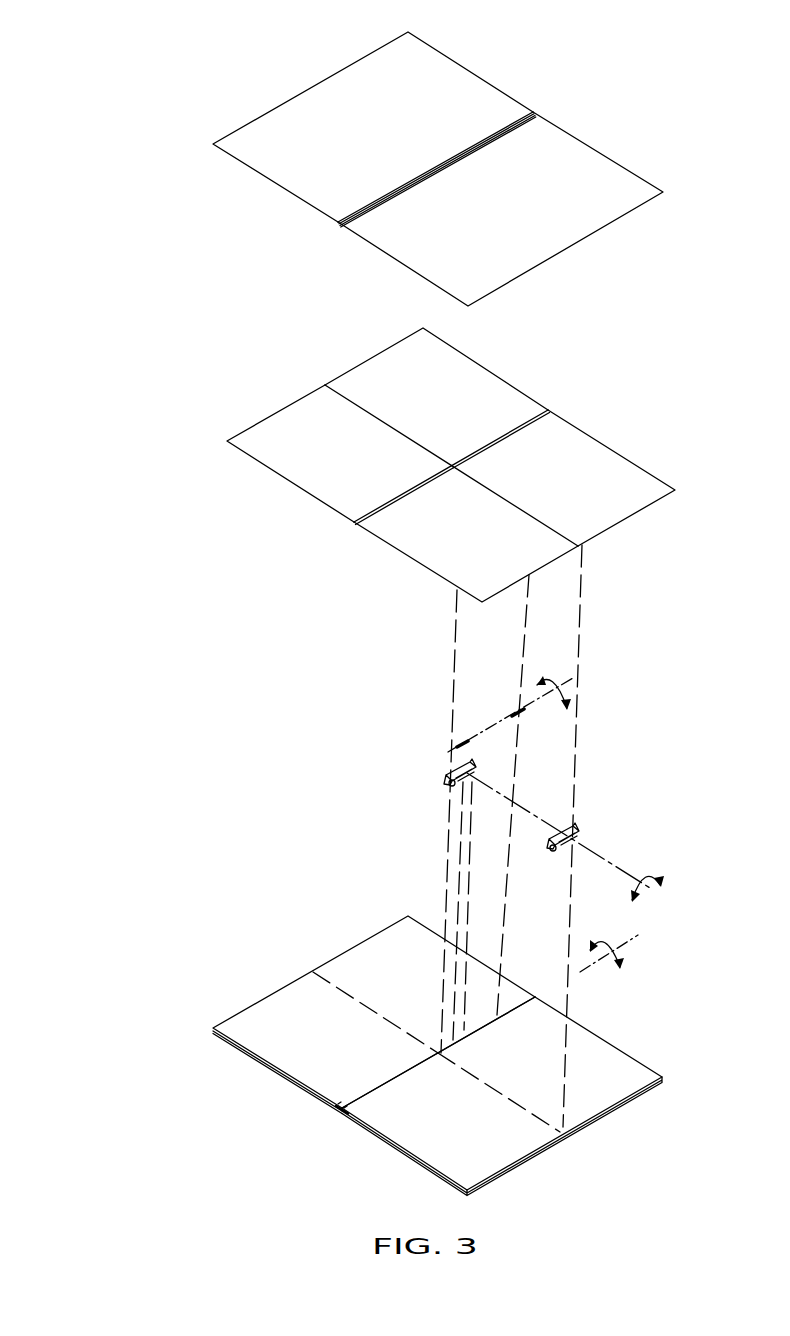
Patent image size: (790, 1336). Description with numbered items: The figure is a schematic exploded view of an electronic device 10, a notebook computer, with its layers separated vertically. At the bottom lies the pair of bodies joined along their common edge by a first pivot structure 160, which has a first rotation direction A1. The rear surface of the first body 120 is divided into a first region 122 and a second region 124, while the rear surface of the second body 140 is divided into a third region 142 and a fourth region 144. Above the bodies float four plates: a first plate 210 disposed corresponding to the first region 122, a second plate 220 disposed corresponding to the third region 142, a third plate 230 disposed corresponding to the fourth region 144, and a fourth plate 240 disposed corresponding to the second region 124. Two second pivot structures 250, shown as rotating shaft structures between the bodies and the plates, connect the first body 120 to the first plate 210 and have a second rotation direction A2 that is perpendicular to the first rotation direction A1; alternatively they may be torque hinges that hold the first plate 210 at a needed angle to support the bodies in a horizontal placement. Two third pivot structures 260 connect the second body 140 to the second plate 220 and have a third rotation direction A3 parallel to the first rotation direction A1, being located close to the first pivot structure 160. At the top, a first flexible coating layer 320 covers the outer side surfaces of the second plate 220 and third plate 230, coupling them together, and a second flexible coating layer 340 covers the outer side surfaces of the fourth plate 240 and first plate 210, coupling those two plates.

The electronic device 10 is at (110, 101).
The first body 120 is at (512, 1091).
The first region 122 is at (498, 1153).
The second region 124 is at (598, 1097).
The second body 140 is at (364, 1006).
The third region 142 is at (375, 955).
The fourth region 144 is at (283, 1008).
The first pivot structure 160 is at (337, 1117).
The first plate 210 is at (408, 533).
The second plate 220 is at (390, 363).
The third plate 230 is at (288, 420).
The fourth plate 240 is at (605, 460).
The second pivot structure 250 is at (590, 818).
The third pivot structure 260 is at (440, 752).
The first flexible coating layer 320 is at (473, 92).
The second flexible coating layer 340 is at (591, 165).
The first rotation direction A1 is at (609, 941).
The second rotation direction A2 is at (654, 899).
The third rotation direction A3 is at (554, 680).